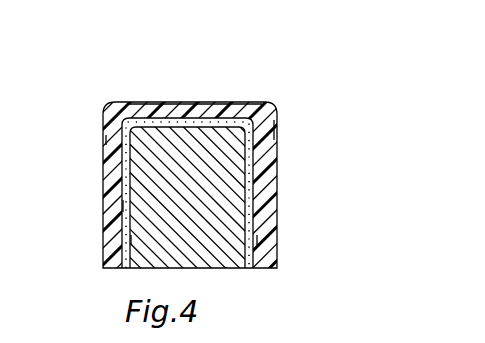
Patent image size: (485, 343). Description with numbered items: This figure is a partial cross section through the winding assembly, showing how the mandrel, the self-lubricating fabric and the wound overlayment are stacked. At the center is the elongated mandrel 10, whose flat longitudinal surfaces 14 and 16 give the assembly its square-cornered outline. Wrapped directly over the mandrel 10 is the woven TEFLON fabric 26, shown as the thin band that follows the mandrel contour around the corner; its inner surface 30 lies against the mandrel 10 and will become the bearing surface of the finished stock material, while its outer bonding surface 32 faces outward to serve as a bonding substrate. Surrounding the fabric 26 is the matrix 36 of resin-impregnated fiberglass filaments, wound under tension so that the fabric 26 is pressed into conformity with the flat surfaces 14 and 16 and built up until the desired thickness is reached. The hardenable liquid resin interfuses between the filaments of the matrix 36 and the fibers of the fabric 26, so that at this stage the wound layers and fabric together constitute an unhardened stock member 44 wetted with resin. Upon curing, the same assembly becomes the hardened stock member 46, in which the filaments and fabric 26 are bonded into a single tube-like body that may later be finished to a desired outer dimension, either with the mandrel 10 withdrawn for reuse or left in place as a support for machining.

The mandrel 10 is at (228, 150).
The flat longitudinal surface 14 is at (128, 169).
The flat longitudinal surface 16 is at (254, 193).
The woven TEFLON fabric 26 is at (126, 134).
The inner surface of the fabric 30 is at (140, 242).
The bonding surface 32 is at (128, 206).
The matrix 36 is at (238, 103).
The unhardened stock member 44 is at (271, 123).
The hardened stock member 46 is at (261, 240).